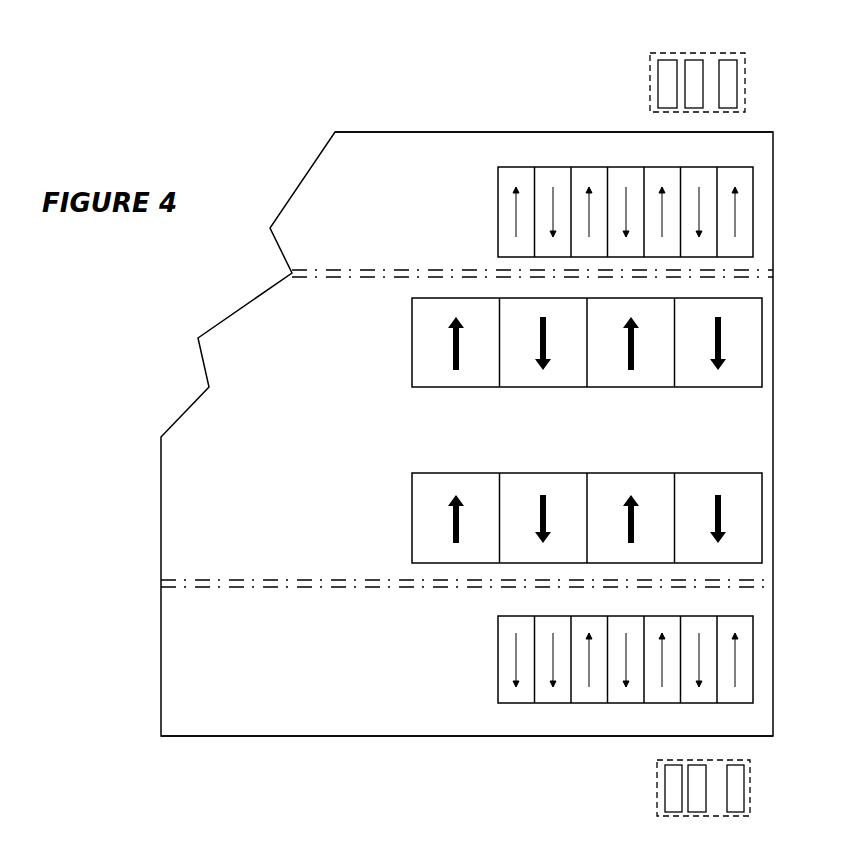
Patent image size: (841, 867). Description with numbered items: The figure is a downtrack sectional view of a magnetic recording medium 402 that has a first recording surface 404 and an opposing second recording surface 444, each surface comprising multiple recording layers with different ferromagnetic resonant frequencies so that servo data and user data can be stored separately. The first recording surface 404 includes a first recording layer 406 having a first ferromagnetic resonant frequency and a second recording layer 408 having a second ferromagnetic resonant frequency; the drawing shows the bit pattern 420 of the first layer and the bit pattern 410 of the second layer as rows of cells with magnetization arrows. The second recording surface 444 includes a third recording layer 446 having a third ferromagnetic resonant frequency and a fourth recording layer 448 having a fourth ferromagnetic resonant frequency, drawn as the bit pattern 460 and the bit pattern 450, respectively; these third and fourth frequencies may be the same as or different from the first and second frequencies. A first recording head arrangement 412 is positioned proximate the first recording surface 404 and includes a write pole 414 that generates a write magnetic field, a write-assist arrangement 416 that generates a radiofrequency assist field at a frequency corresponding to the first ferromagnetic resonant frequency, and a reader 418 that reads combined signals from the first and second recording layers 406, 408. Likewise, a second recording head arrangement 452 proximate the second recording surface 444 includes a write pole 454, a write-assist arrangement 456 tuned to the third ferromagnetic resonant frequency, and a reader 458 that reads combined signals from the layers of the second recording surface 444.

The magnetic recording medium 402 is at (773, 418).
The first recording surface 404 is at (558, 132).
The first recording layer 406 is at (392, 208).
The second recording layer 408 is at (356, 331).
The second array of elements (f2) 410 is at (520, 388).
The first recording head arrangement 412 is at (650, 90).
The write pole 414 is at (668, 60).
The write-assist arrangement 416 is at (690, 60).
The reader 418 is at (728, 60).
The first array of elements (f1) 420 is at (498, 187).
The second recording surface 444 is at (473, 737).
The third recording layer 446 is at (432, 659).
The fourth recording layer 448 is at (362, 514).
The fourth array of elements (f4) 450 is at (612, 473).
The second recording head arrangement 452 is at (657, 790).
The write pole 454 is at (672, 816).
The write-assist arrangement 456 is at (697, 816).
The reader 458 is at (735, 816).
The third array of elements (f3) 460 is at (498, 640).